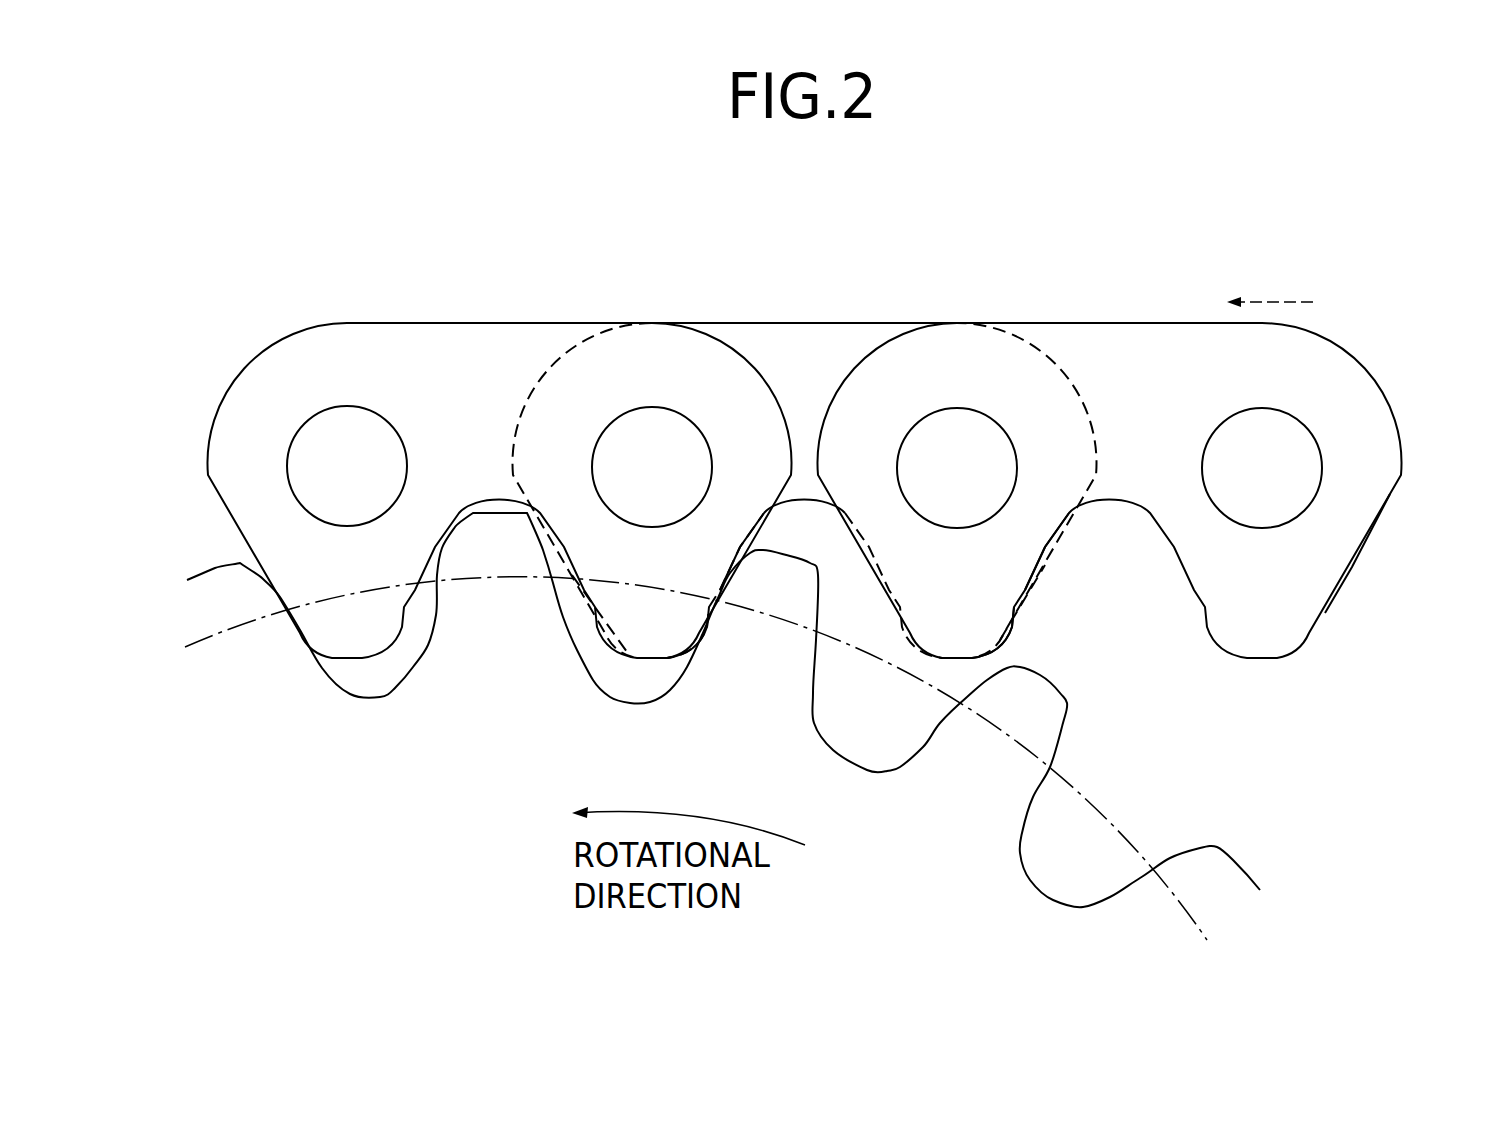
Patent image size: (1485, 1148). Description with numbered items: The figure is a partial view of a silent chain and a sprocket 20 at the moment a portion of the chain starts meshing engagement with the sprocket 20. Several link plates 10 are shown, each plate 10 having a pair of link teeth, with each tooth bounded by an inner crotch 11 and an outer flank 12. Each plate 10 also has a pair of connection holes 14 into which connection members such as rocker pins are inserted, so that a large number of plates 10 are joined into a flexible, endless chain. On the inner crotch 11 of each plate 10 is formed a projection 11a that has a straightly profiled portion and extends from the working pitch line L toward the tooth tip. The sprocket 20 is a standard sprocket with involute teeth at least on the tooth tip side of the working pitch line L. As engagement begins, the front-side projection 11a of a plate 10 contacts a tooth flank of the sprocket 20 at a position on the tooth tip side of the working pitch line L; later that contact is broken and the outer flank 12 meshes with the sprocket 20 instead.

The plate 10 is at (474, 322).
The inner crotch 11 is at (712, 582).
The projection 11a is at (700, 644).
The outer flank 12 is at (734, 588).
The connection hole 14 is at (386, 420).
The sprocket 20 is at (472, 734).
The working pitch line L is at (1180, 907).